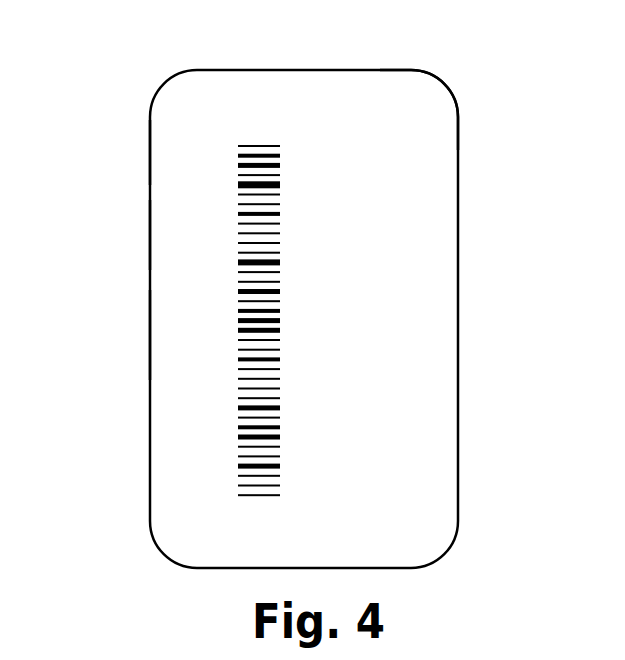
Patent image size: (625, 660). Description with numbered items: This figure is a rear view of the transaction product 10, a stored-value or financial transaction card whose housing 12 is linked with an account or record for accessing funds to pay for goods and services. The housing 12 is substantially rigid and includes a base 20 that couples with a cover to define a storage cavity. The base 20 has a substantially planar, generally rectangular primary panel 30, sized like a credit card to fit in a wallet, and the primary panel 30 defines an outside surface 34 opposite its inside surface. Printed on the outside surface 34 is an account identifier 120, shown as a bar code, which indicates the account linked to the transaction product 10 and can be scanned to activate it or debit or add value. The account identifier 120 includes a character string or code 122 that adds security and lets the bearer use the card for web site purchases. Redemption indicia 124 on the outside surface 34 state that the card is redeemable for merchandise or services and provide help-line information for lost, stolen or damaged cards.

The transaction product 10 is at (150, 62).
The housing 12 is at (454, 82).
The base 20 is at (140, 334).
The primary panel 30 is at (190, 152).
The outside surface 34 is at (178, 225).
The account identifier 120 is at (261, 136).
The character string or code 122 is at (222, 430).
The redemption indicia 124 is at (430, 243).